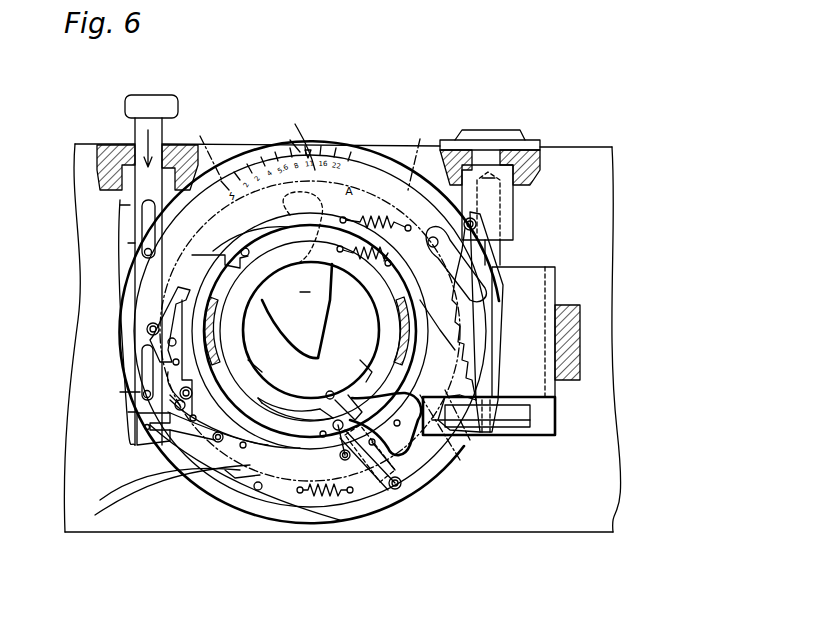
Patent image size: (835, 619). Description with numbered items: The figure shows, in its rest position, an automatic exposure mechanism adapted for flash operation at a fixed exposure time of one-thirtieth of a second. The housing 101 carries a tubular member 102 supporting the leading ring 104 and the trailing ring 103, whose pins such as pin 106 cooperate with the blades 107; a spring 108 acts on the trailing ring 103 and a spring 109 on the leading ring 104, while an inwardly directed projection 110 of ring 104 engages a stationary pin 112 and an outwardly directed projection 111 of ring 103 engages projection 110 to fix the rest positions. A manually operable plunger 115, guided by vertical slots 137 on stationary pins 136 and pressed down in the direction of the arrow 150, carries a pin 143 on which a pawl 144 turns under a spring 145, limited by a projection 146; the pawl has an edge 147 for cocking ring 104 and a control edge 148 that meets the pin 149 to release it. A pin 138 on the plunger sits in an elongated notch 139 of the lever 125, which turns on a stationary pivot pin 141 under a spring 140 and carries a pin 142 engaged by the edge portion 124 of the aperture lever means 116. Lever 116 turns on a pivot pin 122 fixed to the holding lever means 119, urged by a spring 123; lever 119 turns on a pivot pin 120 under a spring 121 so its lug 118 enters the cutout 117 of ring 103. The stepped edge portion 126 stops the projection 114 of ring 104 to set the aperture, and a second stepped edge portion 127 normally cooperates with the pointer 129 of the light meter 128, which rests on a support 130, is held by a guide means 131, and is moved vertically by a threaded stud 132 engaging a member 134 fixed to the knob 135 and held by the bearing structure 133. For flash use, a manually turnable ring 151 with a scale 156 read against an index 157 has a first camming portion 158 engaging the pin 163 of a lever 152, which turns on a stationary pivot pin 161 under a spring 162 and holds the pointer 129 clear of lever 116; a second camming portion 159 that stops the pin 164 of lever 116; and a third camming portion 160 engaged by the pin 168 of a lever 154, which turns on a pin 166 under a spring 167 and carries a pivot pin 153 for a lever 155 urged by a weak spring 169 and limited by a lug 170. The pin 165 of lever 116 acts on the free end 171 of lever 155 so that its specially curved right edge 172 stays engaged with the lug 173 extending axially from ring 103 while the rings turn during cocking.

The housing 101 is at (340, 144).
The tubular member 102 is at (247, 320).
The trailing ring 103 is at (382, 309).
The leading ring 104 is at (266, 231).
The pin 106 is at (328, 214).
The blades 107 is at (312, 291).
The spring 108 is at (445, 254).
The spring 109 is at (381, 246).
The inwardly directed projection 110 is at (240, 250).
The outwardly directed projection 111 is at (215, 254).
The stationary pin 112 is at (289, 291).
The projection 114 is at (420, 456).
The plunger 115 is at (132, 194).
The aperture lever means 116 is at (478, 293).
The cutout 117 is at (266, 372).
The lug 118 is at (300, 391).
The holding lever means 119 is at (312, 396).
The pivot pin 120 is at (335, 464).
The spring 121 is at (344, 462).
The pivot pin 122 is at (322, 480).
The spring 123 is at (338, 470).
The edge portion 124 is at (295, 496).
The lever 125 is at (112, 532).
The stepped edge portion 126 is at (362, 368).
The stepped edge portion 127 is at (472, 370).
The light meter 128 is at (530, 294).
The pointer 129 is at (520, 408).
The support 130 is at (530, 428).
The guide means 131 is at (565, 304).
The threaded stud 132 is at (502, 251).
The bearing structure 133 is at (527, 158).
The member 134 is at (505, 204).
The knob 135 is at (522, 134).
The stationary pins 136 is at (134, 241).
The vertical slots 137 is at (132, 211).
The pin 138 is at (168, 441).
The elongated notch 139 is at (143, 427).
The spring 140 is at (130, 480).
The stationary pivot pin 141 is at (64, 528).
The pin 142 is at (262, 494).
The pin 143 is at (178, 328).
The pawl 144 is at (160, 298).
The spring 145 is at (158, 308).
The projection 146 is at (158, 372).
The edge 147 is at (162, 318).
The control edge 148 is at (160, 283).
The pin 149 is at (178, 378).
The arrow 150 is at (146, 140).
The manually turnable ring 151 is at (202, 148).
The lever 152 is at (488, 350).
The pivot pin 153 is at (399, 487).
The lever 154 is at (256, 492).
The lever 155 is at (402, 456).
The scale 156 is at (295, 135).
The index 157 is at (300, 150).
The first camming portion 158 is at (420, 155).
The second camming portion 159 is at (446, 418).
The third camming portion 160 is at (175, 468).
The stationary pivot pin 161 is at (486, 296).
The spring 162 is at (478, 266).
The pin 163 is at (436, 236).
The pin 164 is at (470, 440).
The pin 165 is at (333, 391).
The pin 166 is at (212, 439).
The spring 167 is at (248, 360).
The pin 168 is at (238, 500).
The spring 169 is at (392, 492).
The lug 170 is at (374, 484).
The free end 171 is at (205, 480).
The right edge 172 is at (228, 497).
The lug 173 is at (372, 342).